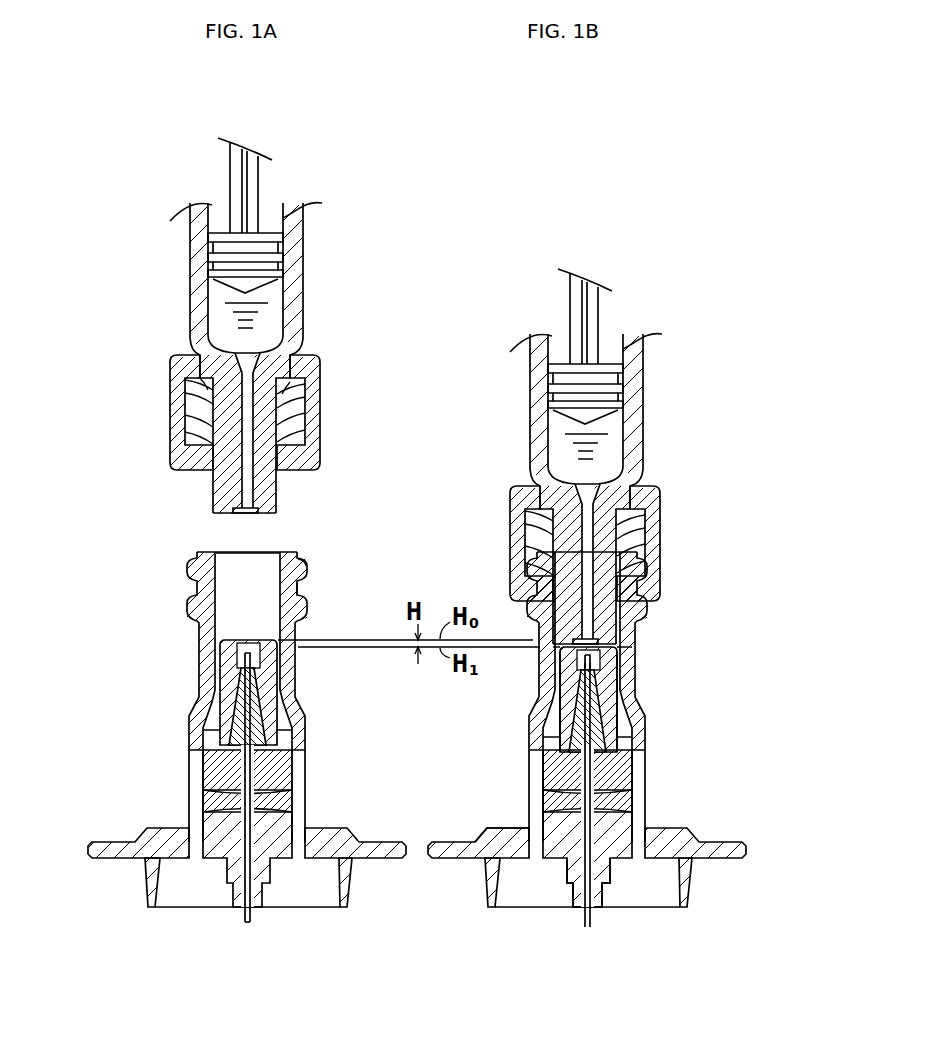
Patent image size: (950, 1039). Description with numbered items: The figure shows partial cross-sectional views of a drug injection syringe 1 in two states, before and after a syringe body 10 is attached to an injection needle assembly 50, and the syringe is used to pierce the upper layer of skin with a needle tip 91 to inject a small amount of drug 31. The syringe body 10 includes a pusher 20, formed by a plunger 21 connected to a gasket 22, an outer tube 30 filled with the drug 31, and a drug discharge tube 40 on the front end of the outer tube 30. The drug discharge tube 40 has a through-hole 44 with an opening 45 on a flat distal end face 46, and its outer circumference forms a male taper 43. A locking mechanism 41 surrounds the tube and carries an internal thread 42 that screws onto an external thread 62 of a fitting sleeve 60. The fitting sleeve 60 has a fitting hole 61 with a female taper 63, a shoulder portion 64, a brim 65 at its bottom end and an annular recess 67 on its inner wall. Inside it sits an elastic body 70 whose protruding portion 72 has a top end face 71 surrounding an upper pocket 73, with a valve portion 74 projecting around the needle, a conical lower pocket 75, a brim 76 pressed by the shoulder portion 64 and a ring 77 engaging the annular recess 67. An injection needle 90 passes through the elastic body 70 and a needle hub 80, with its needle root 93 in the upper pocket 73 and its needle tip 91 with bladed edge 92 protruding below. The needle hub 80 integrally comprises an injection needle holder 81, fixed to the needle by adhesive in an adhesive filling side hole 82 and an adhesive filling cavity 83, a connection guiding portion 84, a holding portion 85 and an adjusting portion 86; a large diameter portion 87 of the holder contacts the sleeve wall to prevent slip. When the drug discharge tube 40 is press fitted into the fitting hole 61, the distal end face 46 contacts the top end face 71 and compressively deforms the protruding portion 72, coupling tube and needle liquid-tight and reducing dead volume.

In FIG. 1A, the drug injection syringe 1 is at (399, 160).
In FIG. 1A, the syringe body 10 is at (106, 168).
In FIG. 1A, the pusher 20 is at (226, 168).
In FIG. 1A, the plunger 21 is at (255, 208).
In FIG. 1A, the gasket 22 is at (270, 258).
In FIG. 1A, the outer tube 30 is at (193, 251).
In FIG. 1A, the drug 31 is at (262, 320).
In FIG. 1A, the drug discharge tube 40 is at (206, 419).
In FIG. 1A, the locking mechanism 41 is at (318, 358).
In FIG. 1A, the internal thread 42 is at (300, 413).
In FIG. 1A, the male taper 43 is at (282, 490).
In FIG. 1A, the through-hole 44 is at (247, 492).
In FIG. 1A, the opening 45 is at (243, 516).
In FIG. 1A, the distal end face 46 is at (275, 520).
In FIG. 1A, the injection needle assembly 50 is at (106, 620).
In FIG. 1A, the fitting sleeve 60 is at (193, 640).
In FIG. 1A, the fitting hole 61 is at (242, 570).
In FIG. 1A, the external thread 62 is at (304, 567).
In FIG. 1A, the female taper 63 is at (285, 590).
In FIG. 1B, the shoulder portion 64 is at (531, 712).
In FIG. 1B, the brim 65 is at (512, 832).
In FIG. 1B, the annular recess 67 is at (633, 714).
In FIG. 1A, the elastic body 70 is at (220, 698).
In FIG. 1A, the top end face 71 is at (231, 648).
In FIG. 1A, the protruding portion 72 is at (268, 663).
In FIG. 1A, the upper pocket 73 is at (249, 655).
In FIG. 1B, the valve portion 74 is at (558, 658).
In FIG. 1A, the lower pocket 75 is at (255, 710).
In FIG. 1A, the brim 76 is at (283, 745).
In FIG. 1B, the ring 77 is at (561, 700).
In FIG. 1A, the needle hub 80 is at (216, 773).
In FIG. 1A, the injection needle holder 81 is at (280, 775).
In FIG. 1A, the adhesive filling side hole 82 is at (275, 798).
In FIG. 1A, the adhesive filling cavity 83 is at (255, 818).
In FIG. 1B, the connection guiding portion 84 is at (440, 856).
In FIG. 1B, the holding portion 85 is at (487, 887).
In FIG. 1B, the adjusting portion 86 is at (578, 880).
In FIG. 1B, the large diameter portion 87 is at (629, 745).
In FIG. 1A, the injection needle 90 is at (240, 921).
In FIG. 1A, the needle tip 91 is at (247, 923).
In FIG. 1A, the bladed edge 92 is at (249, 923).
In FIG. 1B, the needle root 93 is at (612, 647).